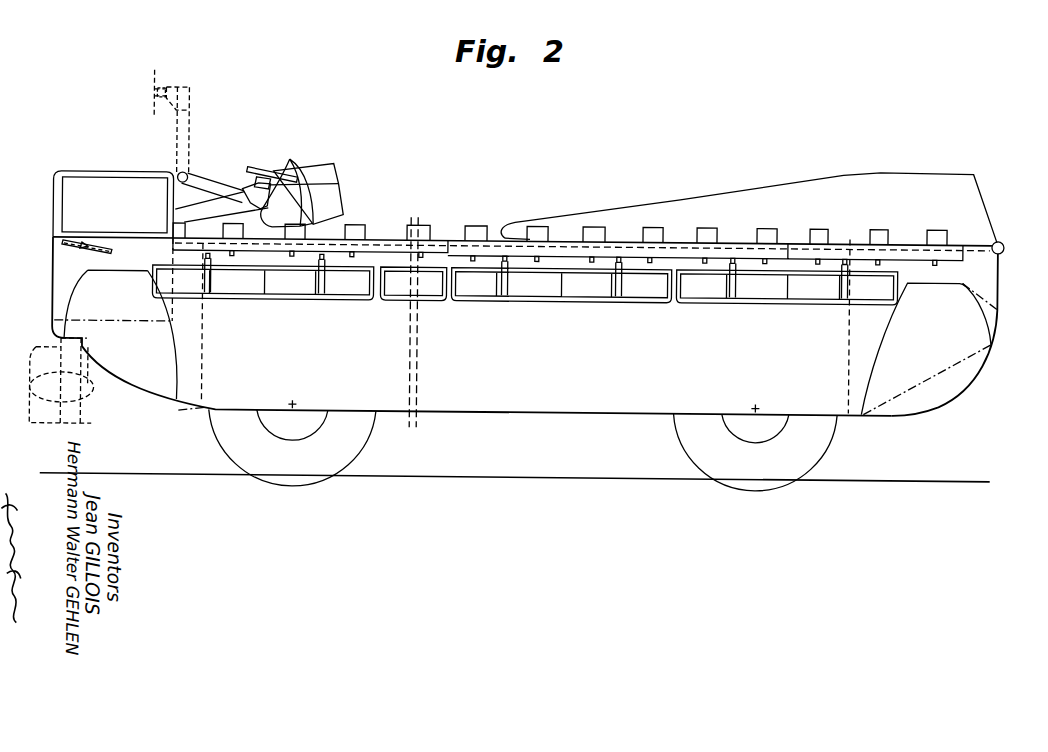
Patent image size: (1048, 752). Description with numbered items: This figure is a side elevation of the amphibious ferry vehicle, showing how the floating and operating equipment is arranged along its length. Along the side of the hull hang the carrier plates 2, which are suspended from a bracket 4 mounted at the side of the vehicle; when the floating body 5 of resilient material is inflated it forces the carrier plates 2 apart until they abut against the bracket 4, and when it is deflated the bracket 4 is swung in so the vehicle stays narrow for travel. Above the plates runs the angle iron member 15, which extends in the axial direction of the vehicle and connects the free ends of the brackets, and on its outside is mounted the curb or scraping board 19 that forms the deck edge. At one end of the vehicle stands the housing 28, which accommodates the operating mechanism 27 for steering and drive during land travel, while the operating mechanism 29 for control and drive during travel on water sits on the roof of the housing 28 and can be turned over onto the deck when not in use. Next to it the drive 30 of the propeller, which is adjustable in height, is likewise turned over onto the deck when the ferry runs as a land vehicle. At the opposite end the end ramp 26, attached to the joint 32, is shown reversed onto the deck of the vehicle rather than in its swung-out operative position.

The carrier plates 2 is at (290, 282).
The bracket 4 is at (324, 257).
The floating body 5 is at (562, 396).
The angle iron member 15 is at (372, 247).
The curb or scraping board 19 is at (471, 223).
The end ramp 26 is at (798, 192).
The operating mechanism for steering and drive during land travel 27 is at (83, 246).
The housing 28 is at (100, 187).
The operating mechanism for control and drive during travel on water 29 is at (212, 187).
The drive of the propeller 30 is at (300, 187).
The joint 32 is at (1000, 234).